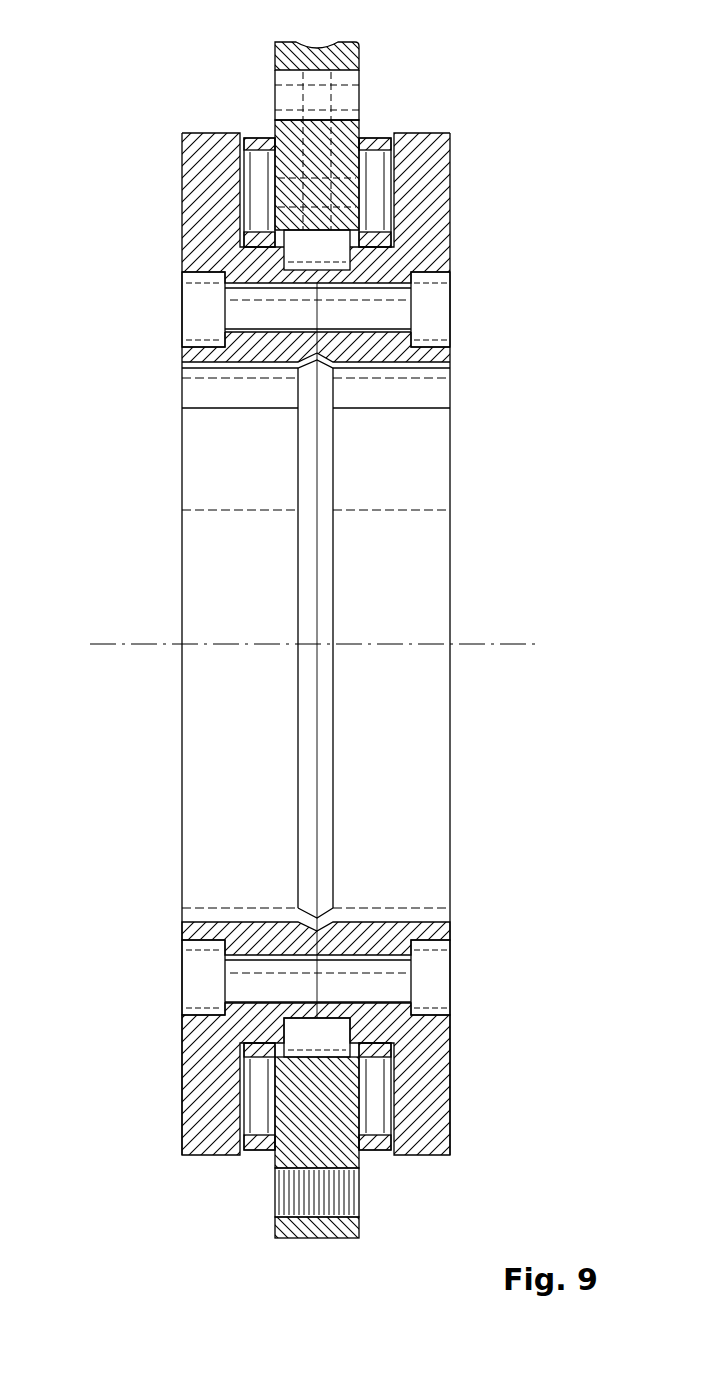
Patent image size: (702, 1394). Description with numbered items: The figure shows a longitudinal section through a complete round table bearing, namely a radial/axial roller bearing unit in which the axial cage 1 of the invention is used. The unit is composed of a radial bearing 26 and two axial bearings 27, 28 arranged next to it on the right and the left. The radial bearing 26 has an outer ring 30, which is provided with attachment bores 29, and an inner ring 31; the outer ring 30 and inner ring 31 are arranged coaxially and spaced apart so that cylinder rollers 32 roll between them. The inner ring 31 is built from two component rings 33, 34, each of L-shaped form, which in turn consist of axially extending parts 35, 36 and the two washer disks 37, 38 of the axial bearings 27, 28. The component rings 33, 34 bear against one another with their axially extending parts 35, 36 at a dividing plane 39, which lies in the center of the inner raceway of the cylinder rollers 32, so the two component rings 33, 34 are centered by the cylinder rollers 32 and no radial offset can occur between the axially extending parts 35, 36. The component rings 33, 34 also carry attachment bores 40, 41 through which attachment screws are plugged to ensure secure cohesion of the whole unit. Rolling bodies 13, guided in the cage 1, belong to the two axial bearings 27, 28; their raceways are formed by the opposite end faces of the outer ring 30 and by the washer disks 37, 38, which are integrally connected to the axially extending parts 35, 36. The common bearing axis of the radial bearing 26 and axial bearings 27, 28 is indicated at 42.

The axial cage 1 is at (252, 1152).
The rolling bodies 13 is at (255, 1110).
The radial bearing 26 is at (262, 80).
The axial bearing 27 is at (382, 132).
The axial bearing 28 is at (255, 132).
The attachment bores 29 is at (330, 1238).
The outer ring 30 is at (352, 55).
The inner ring 31 is at (282, 910).
The cylinder rollers 32 is at (332, 246).
The component ring 33 is at (460, 353).
The component ring 34 is at (172, 353).
The axially extending part 35 is at (385, 352).
The axially extending part 36 is at (250, 352).
The washer disk 37 is at (438, 203).
The washer disk 38 is at (196, 204).
The dividing plane 39 is at (316, 759).
The attachment bores 40 is at (436, 990).
The attachment bores 41 is at (196, 990).
The bearing axis 42 is at (520, 642).